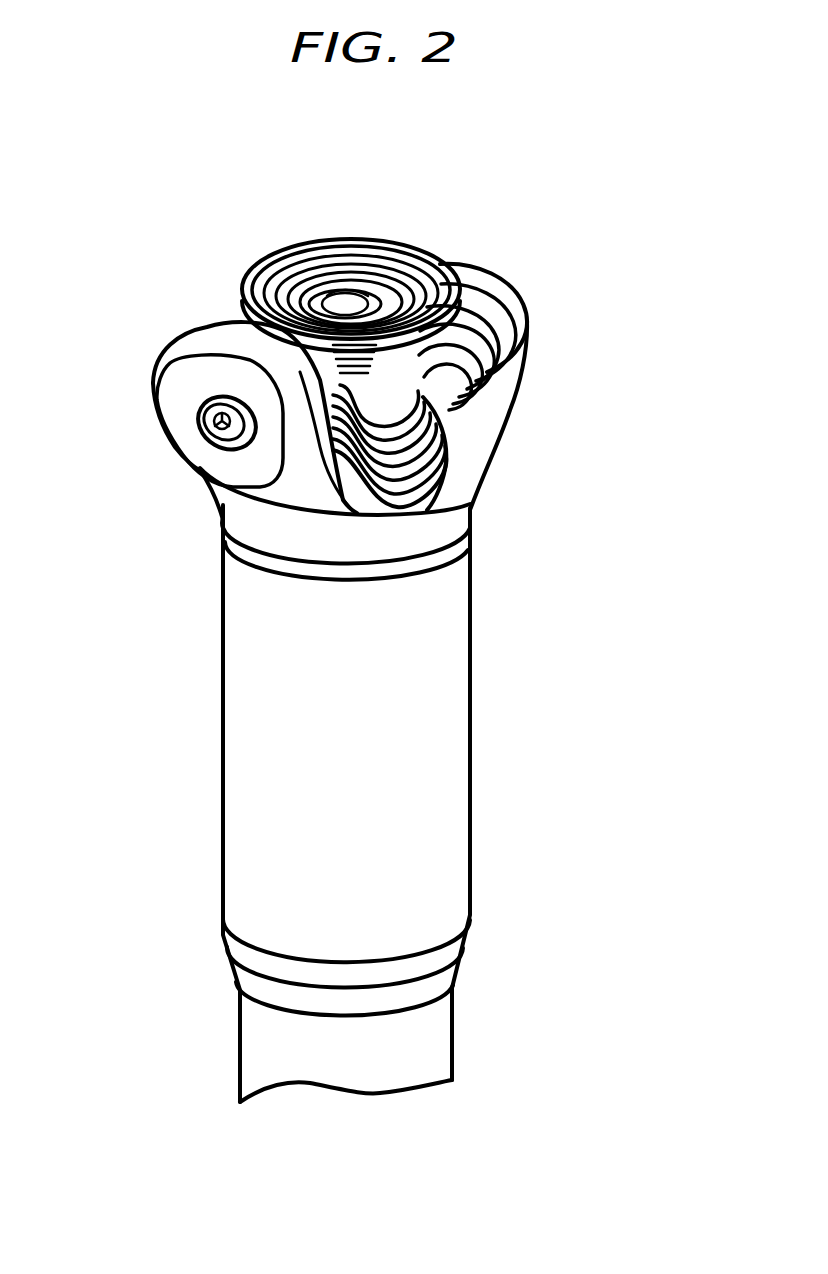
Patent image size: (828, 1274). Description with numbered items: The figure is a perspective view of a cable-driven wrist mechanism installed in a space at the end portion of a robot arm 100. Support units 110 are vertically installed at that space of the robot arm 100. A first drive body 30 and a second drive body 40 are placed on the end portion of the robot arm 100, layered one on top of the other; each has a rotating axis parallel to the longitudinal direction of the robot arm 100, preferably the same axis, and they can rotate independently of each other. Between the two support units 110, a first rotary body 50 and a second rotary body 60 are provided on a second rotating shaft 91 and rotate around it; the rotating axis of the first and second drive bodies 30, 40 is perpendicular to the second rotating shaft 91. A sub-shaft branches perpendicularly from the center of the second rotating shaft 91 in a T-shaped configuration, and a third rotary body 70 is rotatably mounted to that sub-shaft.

The robot arm 100 is at (462, 906).
The second rotary body 60 is at (255, 323).
The second rotating shaft 91 is at (197, 428).
The third rotary body 70 is at (350, 240).
The support units 110 is at (487, 287).
The first rotary body 50 is at (470, 352).
The second drive body 40 is at (420, 432).
The first drive body 30 is at (447, 504).